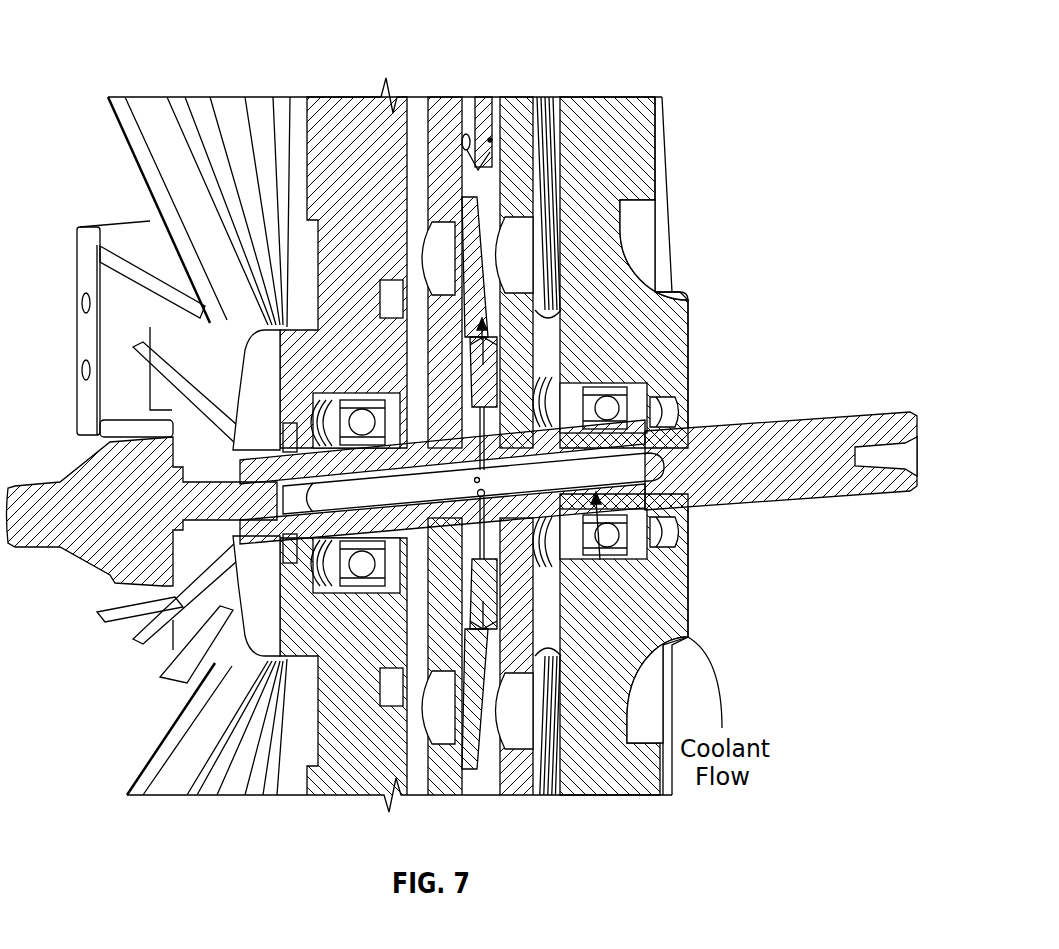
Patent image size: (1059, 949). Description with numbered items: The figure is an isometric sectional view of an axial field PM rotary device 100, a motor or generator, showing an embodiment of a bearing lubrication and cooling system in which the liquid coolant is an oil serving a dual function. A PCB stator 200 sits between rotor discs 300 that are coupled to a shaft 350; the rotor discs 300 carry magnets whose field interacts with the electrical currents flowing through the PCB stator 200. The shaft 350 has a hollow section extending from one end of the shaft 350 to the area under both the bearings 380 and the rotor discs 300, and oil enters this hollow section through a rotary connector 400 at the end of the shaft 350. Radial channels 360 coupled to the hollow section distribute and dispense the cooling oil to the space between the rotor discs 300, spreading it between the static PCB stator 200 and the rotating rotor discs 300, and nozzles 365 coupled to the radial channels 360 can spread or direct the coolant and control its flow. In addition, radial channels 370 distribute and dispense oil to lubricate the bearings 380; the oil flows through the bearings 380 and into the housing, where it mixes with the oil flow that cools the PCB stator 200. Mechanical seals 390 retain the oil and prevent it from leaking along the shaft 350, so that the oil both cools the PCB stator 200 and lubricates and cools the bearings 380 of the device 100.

The axial field PM rotary device 100 is at (838, 68).
The PCB stator 200 is at (478, 98).
The rotor discs 300 is at (453, 177).
The shaft 350 is at (828, 418).
The radial channels 360 is at (655, 290).
The nozzles 365 is at (465, 360).
The radial channels 370 is at (688, 425).
The bearings 380 is at (643, 563).
The mechanical seals 390 is at (690, 520).
The rotary connector 400 is at (42, 528).